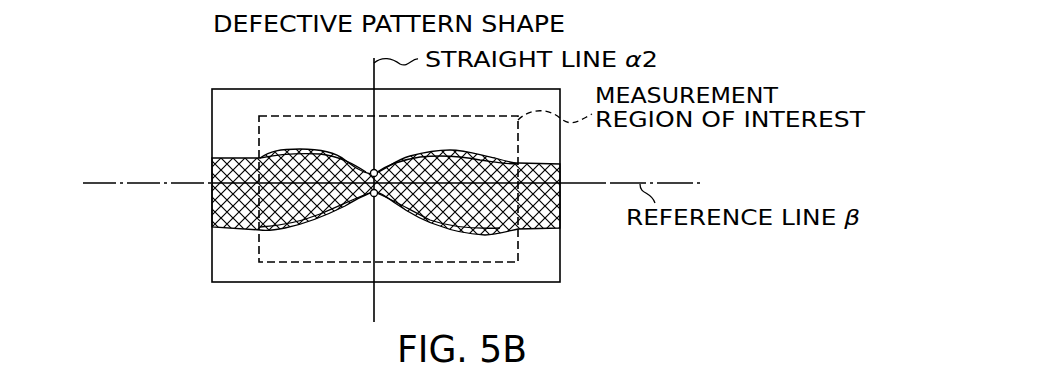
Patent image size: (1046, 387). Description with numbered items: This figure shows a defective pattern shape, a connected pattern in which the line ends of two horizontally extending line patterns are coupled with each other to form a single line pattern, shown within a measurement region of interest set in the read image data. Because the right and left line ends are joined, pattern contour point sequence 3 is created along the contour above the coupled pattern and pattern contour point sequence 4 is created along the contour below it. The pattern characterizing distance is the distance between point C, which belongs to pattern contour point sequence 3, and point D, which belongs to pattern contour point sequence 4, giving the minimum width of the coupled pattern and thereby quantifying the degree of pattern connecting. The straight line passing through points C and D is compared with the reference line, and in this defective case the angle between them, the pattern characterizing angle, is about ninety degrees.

The pattern contour point sequence 3 is at (493, 161).
The pattern contour point sequence 4 is at (490, 236).
The point C is at (378, 171).
The point D is at (377, 196).